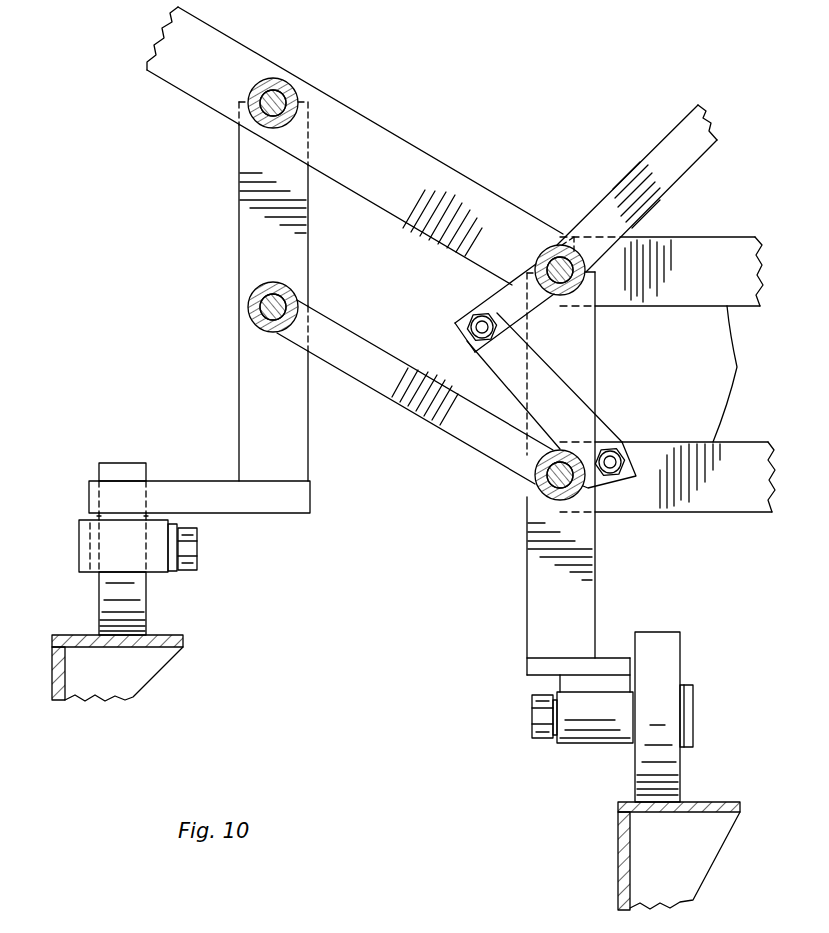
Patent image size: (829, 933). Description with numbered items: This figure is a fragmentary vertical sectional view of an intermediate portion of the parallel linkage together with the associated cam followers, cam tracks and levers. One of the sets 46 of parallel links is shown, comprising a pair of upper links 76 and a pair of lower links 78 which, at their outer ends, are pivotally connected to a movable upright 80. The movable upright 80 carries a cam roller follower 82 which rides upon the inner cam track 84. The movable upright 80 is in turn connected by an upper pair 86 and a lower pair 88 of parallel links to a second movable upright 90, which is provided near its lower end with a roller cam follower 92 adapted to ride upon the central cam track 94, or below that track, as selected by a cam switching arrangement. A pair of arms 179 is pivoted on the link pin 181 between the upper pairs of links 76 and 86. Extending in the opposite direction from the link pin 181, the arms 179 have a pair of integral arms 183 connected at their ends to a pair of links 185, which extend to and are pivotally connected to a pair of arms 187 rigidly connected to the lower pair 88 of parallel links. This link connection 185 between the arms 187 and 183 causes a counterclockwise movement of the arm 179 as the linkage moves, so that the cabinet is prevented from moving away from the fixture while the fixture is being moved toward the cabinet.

The set of parallel links 46 is at (763, 387).
The upper links 76 is at (728, 248).
The lower links 78 is at (740, 497).
The movable upright 80 is at (530, 583).
The cam roller follower 82 is at (667, 652).
The inner cam track 84 is at (717, 812).
The upper pair of parallel links 86 is at (397, 143).
The lower pair of parallel links 88 is at (365, 377).
The second movable upright 90 is at (295, 463).
The roller cam follower 92 is at (110, 470).
The central cam track 94 is at (157, 642).
The arms 179 is at (645, 168).
The link pin 181 is at (557, 265).
The integral arms 183 is at (492, 302).
The links 185 is at (572, 410).
The arms 187 is at (630, 480).